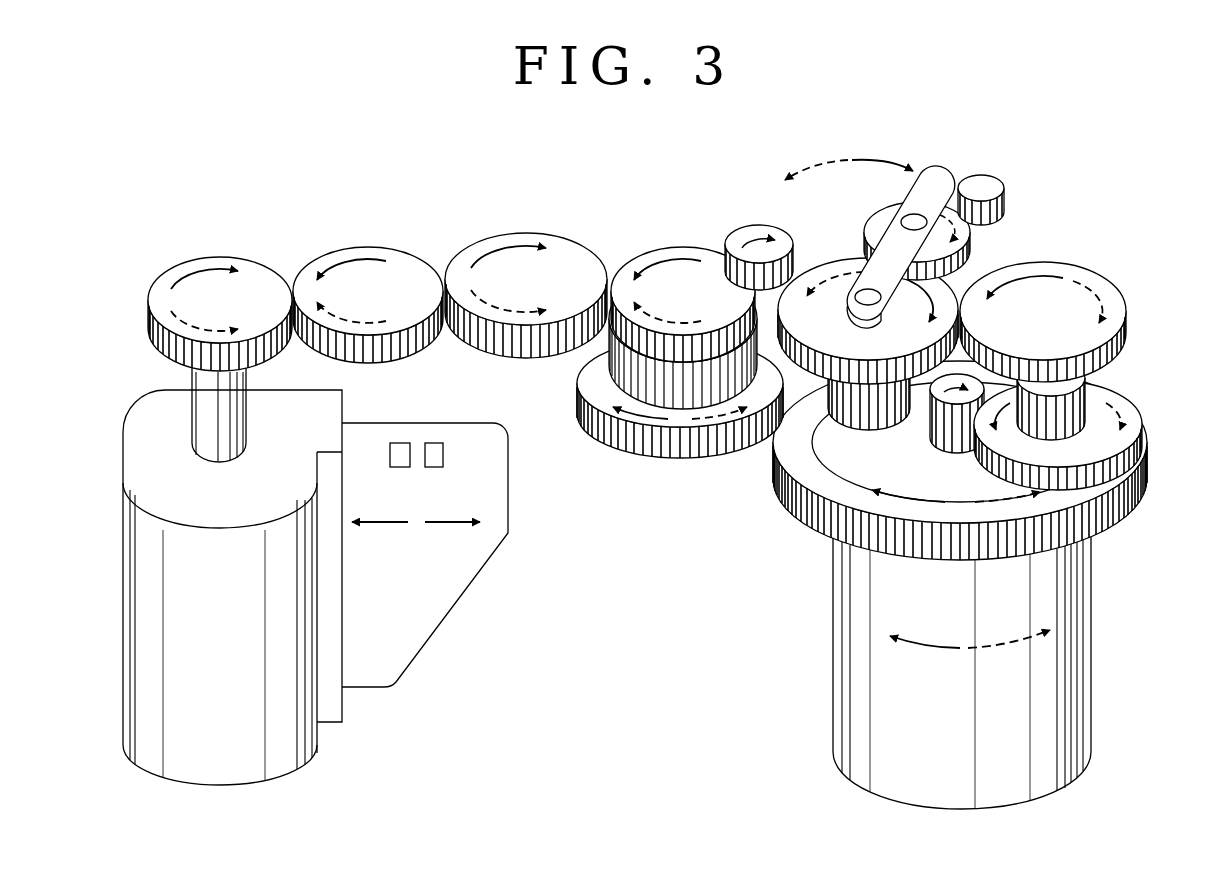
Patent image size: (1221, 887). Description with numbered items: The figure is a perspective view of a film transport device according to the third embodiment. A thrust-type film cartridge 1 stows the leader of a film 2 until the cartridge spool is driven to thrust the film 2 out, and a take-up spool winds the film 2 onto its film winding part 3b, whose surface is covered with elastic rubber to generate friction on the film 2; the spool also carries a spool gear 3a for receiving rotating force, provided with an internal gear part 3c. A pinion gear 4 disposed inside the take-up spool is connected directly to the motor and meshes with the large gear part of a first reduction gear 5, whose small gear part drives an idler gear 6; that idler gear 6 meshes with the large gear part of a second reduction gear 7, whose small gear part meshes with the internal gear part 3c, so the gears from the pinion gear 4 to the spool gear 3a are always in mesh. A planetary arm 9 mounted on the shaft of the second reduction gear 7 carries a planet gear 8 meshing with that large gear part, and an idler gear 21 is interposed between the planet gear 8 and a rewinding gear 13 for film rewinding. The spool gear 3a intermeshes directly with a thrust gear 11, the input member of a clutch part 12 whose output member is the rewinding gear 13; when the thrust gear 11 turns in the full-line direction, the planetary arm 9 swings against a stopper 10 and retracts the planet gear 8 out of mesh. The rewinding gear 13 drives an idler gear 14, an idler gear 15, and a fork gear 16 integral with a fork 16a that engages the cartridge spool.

The film cartridge 1 is at (203, 752).
The film 2 is at (378, 665).
The spool gear 3a is at (1112, 497).
The film winding part 3b is at (1084, 698).
The internal gear part 3c is at (838, 428).
The pinion gear 4 is at (938, 398).
The first reduction gear 5 is at (1120, 388).
The idler gear 6 is at (1082, 270).
The second reduction gear 7 is at (832, 268).
The planet gear 8 is at (880, 224).
The planetary arm 9 is at (937, 185).
The stopper 10 is at (985, 185).
The thrust gear 11 is at (633, 442).
The clutch part 12 is at (627, 368).
The rewinding gear 13 is at (645, 270).
The idler gear 14 is at (540, 255).
The idler gear 15 is at (347, 270).
The fork gear 16 is at (233, 280).
The fork 16a is at (210, 383).
The idler gear 21 is at (752, 235).